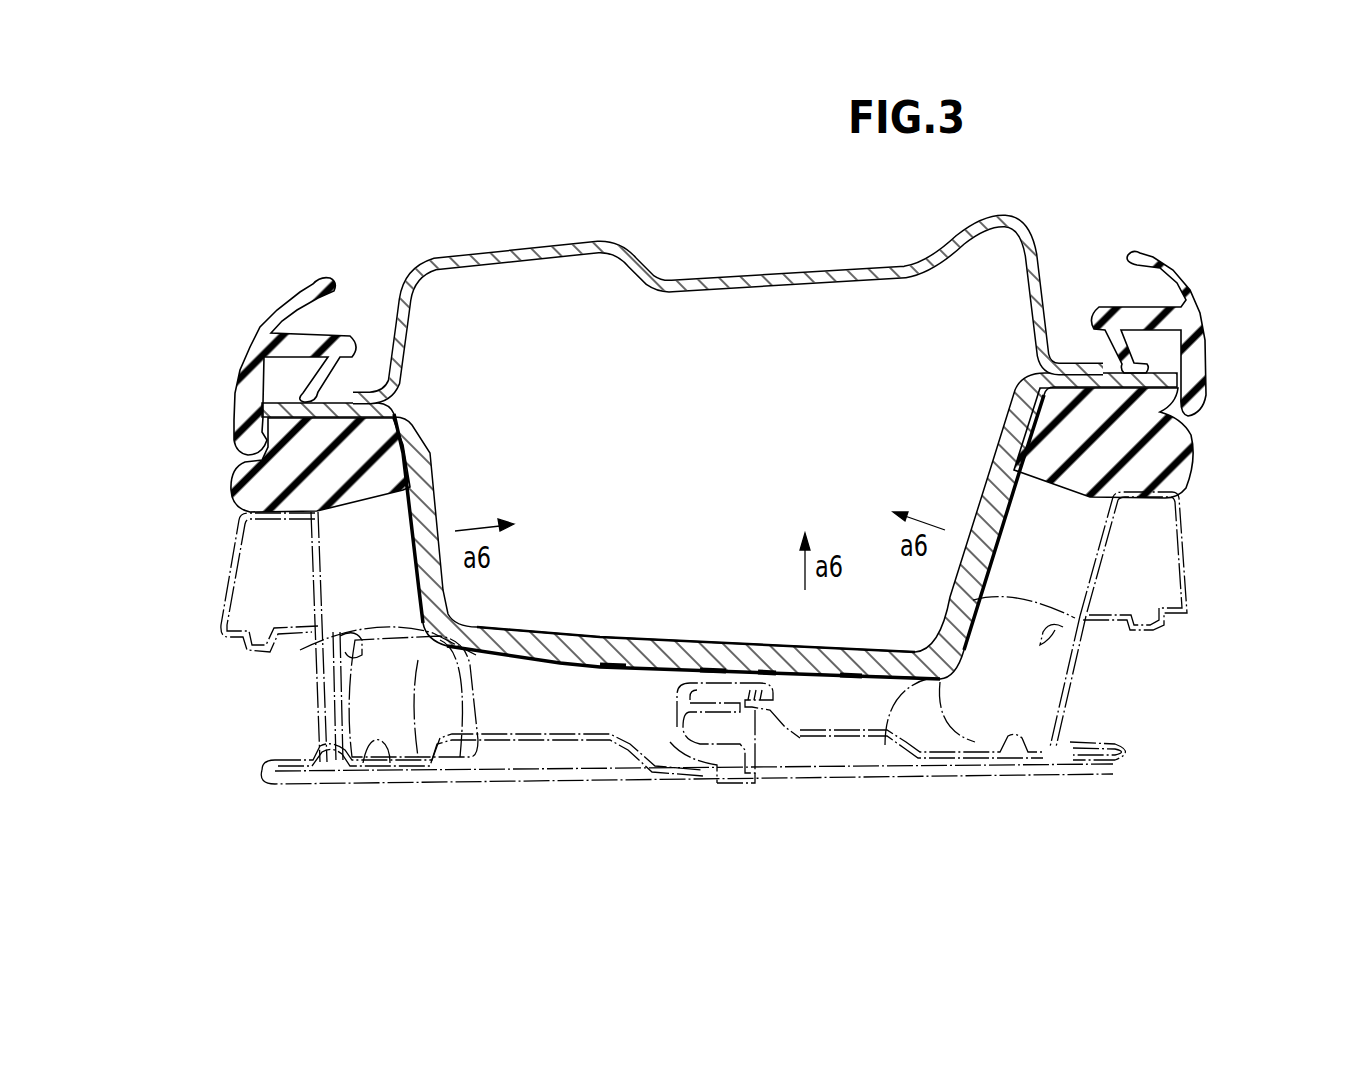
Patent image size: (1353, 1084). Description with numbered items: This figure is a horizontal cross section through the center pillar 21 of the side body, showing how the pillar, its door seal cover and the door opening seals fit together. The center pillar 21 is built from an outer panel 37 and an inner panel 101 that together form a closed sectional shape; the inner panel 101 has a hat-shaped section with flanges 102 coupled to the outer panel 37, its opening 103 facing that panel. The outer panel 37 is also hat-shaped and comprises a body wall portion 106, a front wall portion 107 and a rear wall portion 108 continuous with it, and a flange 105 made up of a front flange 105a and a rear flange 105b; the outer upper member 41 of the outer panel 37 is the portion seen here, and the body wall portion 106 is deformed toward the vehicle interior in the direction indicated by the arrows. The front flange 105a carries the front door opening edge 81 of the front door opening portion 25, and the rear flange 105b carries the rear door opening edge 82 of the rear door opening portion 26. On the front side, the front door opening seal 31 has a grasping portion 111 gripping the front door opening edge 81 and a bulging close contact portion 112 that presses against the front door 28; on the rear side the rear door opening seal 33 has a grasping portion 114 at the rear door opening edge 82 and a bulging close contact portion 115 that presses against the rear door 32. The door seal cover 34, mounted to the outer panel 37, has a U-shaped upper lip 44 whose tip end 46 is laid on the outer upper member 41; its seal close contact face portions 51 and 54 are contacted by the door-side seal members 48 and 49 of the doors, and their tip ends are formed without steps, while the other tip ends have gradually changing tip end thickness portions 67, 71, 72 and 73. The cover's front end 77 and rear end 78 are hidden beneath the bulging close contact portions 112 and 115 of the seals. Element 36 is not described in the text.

The center pillar 21 is at (485, 190).
The front door opening portion 25 is at (236, 386).
The rear door opening portion 26 is at (1212, 394).
The front door 28 is at (437, 800).
The front door opening seal 31 is at (262, 318).
The rear door 32 is at (985, 800).
The rear door opening seal 33 is at (1193, 280).
The door seal cover 34 is at (625, 703).
The frame flange 36 is at (600, 682).
The outer panel 37 is at (719, 526).
The outer upper member 41 is at (552, 632).
The upper lip 44 is at (655, 686).
The tip end of upper lip 46 is at (806, 682).
The door-side seal member 48 is at (425, 623).
The door-side seal member 49 is at (1090, 613).
The seal close contact face portions 51 is at (430, 652).
The seal close contact face portions 54 is at (1030, 698).
The gradually changing tip end thickness portion 67 is at (412, 558).
The gradually changing tip end thickness portion 71 is at (527, 660).
The gradually changing tip end thickness portion 72 is at (852, 687).
The gradually changing tip end thickness portion 73 is at (998, 527).
The front end 77 is at (410, 448).
The rear end 78 is at (1008, 428).
The front door opening edge 81 is at (272, 402).
The rear door opening edge 82 is at (1147, 370).
The inner panel 101 is at (668, 277).
The flanges 102 is at (368, 390).
The opening 103 is at (587, 387).
The flange 105 is at (713, 450).
The front flange 105a is at (240, 473).
The rear flange 105b is at (1162, 432).
The body wall portion 106 is at (730, 650).
The front wall portion 107 is at (440, 503).
The rear wall portion 108 is at (988, 496).
The grasping portion 111 is at (245, 406).
The bulging close contact portion 112 is at (232, 510).
The grasping portion 114 is at (1210, 373).
The bulging close contact portion 115 is at (1208, 482).